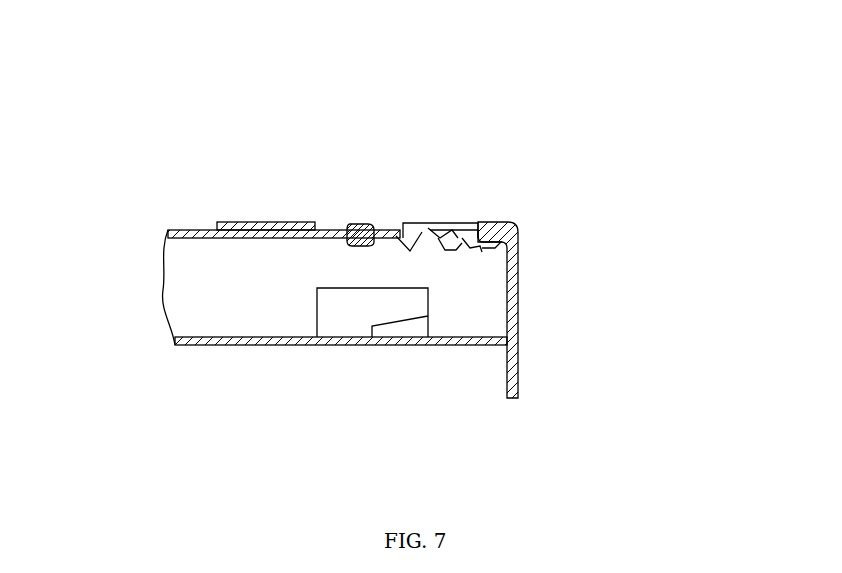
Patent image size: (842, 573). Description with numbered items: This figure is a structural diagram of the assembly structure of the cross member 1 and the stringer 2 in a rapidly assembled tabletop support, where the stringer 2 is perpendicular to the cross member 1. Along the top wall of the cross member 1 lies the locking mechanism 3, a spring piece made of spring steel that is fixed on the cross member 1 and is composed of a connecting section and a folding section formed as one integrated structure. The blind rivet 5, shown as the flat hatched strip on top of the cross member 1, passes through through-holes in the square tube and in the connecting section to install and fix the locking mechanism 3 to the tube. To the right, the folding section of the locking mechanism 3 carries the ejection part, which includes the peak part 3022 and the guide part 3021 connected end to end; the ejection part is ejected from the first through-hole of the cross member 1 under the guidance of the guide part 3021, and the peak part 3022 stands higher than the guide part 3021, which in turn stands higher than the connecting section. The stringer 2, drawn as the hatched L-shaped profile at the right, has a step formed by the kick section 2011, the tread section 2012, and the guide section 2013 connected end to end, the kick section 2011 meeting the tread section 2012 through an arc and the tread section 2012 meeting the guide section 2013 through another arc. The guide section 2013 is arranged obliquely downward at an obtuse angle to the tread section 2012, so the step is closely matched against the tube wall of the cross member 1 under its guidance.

The cross member 1 is at (199, 207).
The blind rivet 5 is at (333, 214).
The locking mechanism 3 is at (367, 215).
The peak part 3022 is at (420, 201).
The guide part 3021 is at (443, 207).
The stringer 2 is at (526, 283).
The kick section 2011 is at (496, 208).
The tread section 2012 is at (473, 278).
The guide section 2013 is at (441, 277).